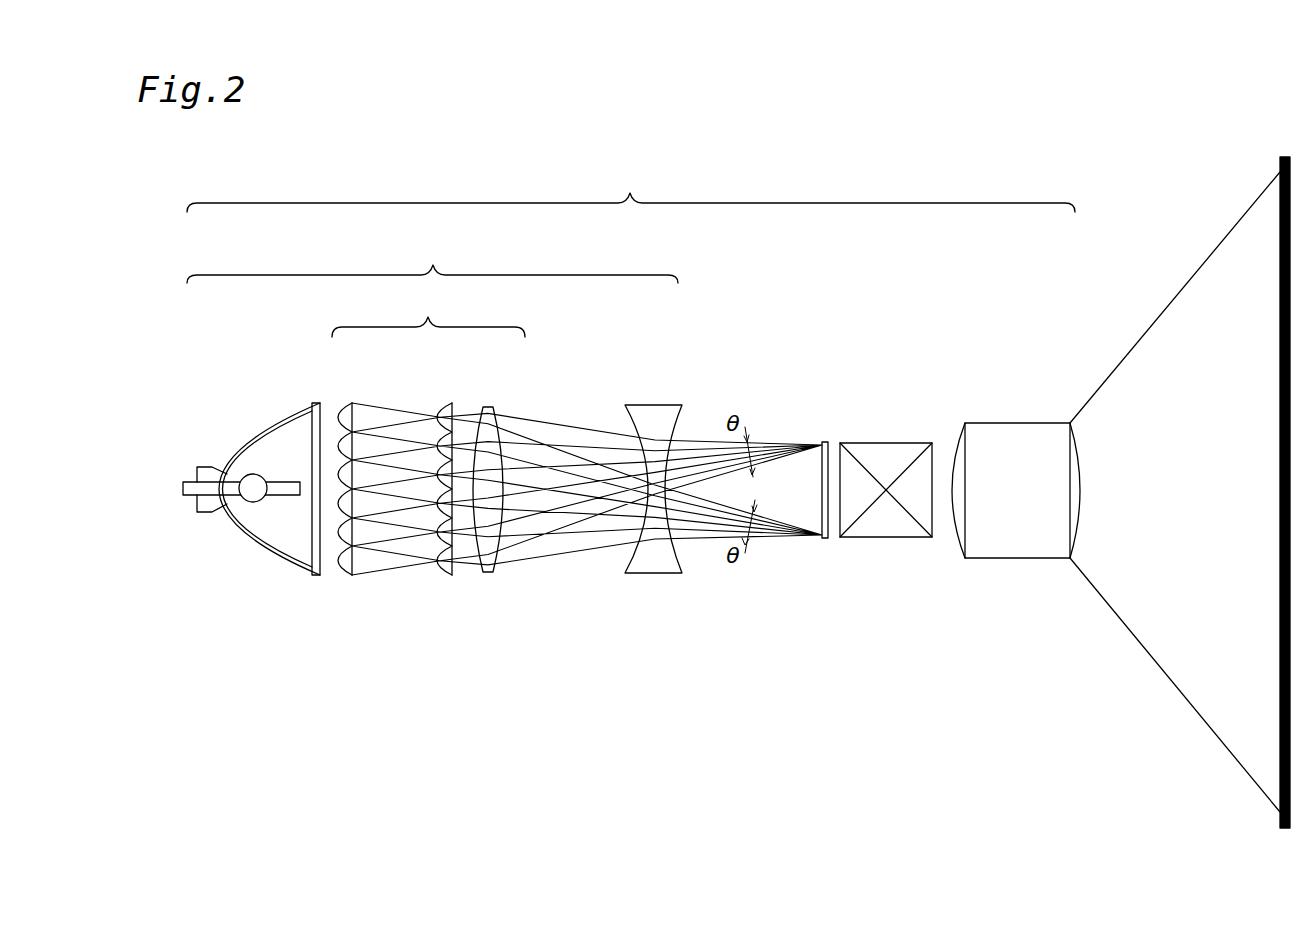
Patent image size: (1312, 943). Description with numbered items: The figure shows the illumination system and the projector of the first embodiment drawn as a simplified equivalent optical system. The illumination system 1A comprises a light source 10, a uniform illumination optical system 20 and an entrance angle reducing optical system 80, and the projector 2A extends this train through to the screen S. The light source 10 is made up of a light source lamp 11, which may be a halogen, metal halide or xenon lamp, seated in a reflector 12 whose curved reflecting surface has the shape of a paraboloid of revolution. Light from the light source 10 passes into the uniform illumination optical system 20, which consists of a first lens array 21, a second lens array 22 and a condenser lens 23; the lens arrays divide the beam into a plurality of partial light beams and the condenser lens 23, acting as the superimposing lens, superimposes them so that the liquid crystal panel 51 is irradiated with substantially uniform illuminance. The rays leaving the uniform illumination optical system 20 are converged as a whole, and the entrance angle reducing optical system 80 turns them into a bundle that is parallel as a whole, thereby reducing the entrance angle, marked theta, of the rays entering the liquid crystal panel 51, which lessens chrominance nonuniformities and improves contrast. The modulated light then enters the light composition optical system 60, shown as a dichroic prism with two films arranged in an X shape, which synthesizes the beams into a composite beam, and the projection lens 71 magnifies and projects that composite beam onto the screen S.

The projector 2A is at (631, 185).
The illumination system 1A is at (432, 255).
The uniform illumination optical system 20 is at (415, 310).
The light source 10 is at (251, 495).
The light source lamp 11 is at (253, 503).
The reflector 12 is at (282, 553).
The first lens array 21 is at (350, 401).
The second lens array 22 is at (449, 401).
The condenser lens 23 is at (489, 404).
The entrance angle reducing optical system 80 is at (654, 404).
The liquid crystal panel 51 is at (829, 440).
The light composition optical system 60 is at (888, 540).
The projection lens 71 is at (1015, 422).
The screen S is at (1286, 156).